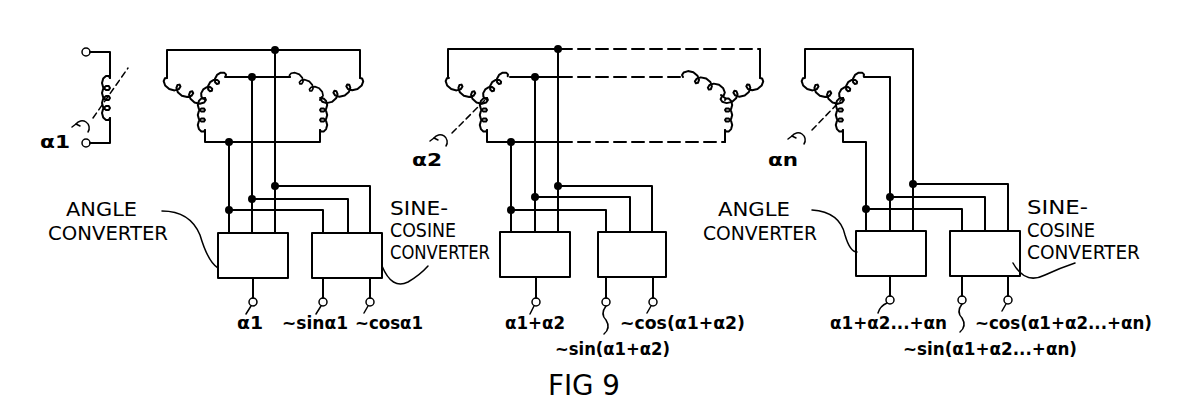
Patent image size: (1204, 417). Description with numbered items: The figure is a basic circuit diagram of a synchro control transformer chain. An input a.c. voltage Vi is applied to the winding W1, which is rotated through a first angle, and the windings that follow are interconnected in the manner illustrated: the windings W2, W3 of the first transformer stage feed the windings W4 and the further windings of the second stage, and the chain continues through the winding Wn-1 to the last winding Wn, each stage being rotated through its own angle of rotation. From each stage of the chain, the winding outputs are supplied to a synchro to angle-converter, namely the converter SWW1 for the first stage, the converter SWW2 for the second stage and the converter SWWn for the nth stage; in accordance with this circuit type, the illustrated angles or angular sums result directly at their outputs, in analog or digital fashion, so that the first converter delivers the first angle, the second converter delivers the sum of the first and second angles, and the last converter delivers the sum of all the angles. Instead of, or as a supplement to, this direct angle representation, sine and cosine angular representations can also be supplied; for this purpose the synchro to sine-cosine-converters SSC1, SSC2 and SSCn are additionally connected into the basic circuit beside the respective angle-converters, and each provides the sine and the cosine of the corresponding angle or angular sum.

The input a.c. voltage Vi is at (85, 97).
The winding W1 is at (109, 90).
The winding W2 is at (235, 103).
The winding W3 is at (333, 102).
The winding W4 is at (517, 103).
The winding Wn-1 is at (718, 97).
The winding Wn is at (828, 104).
The synchro to angle-converter SWW1 is at (253, 273).
The synchro to sine-cosine-converter SSC1 is at (347, 273).
The synchro to angle-converter SWW2 is at (535, 273).
The synchro to sine-cosine-converter SSC2 is at (632, 283).
The synchro to angle-converter SWWn is at (891, 272).
The synchro to sine-cosine-converter SSCn is at (985, 281).